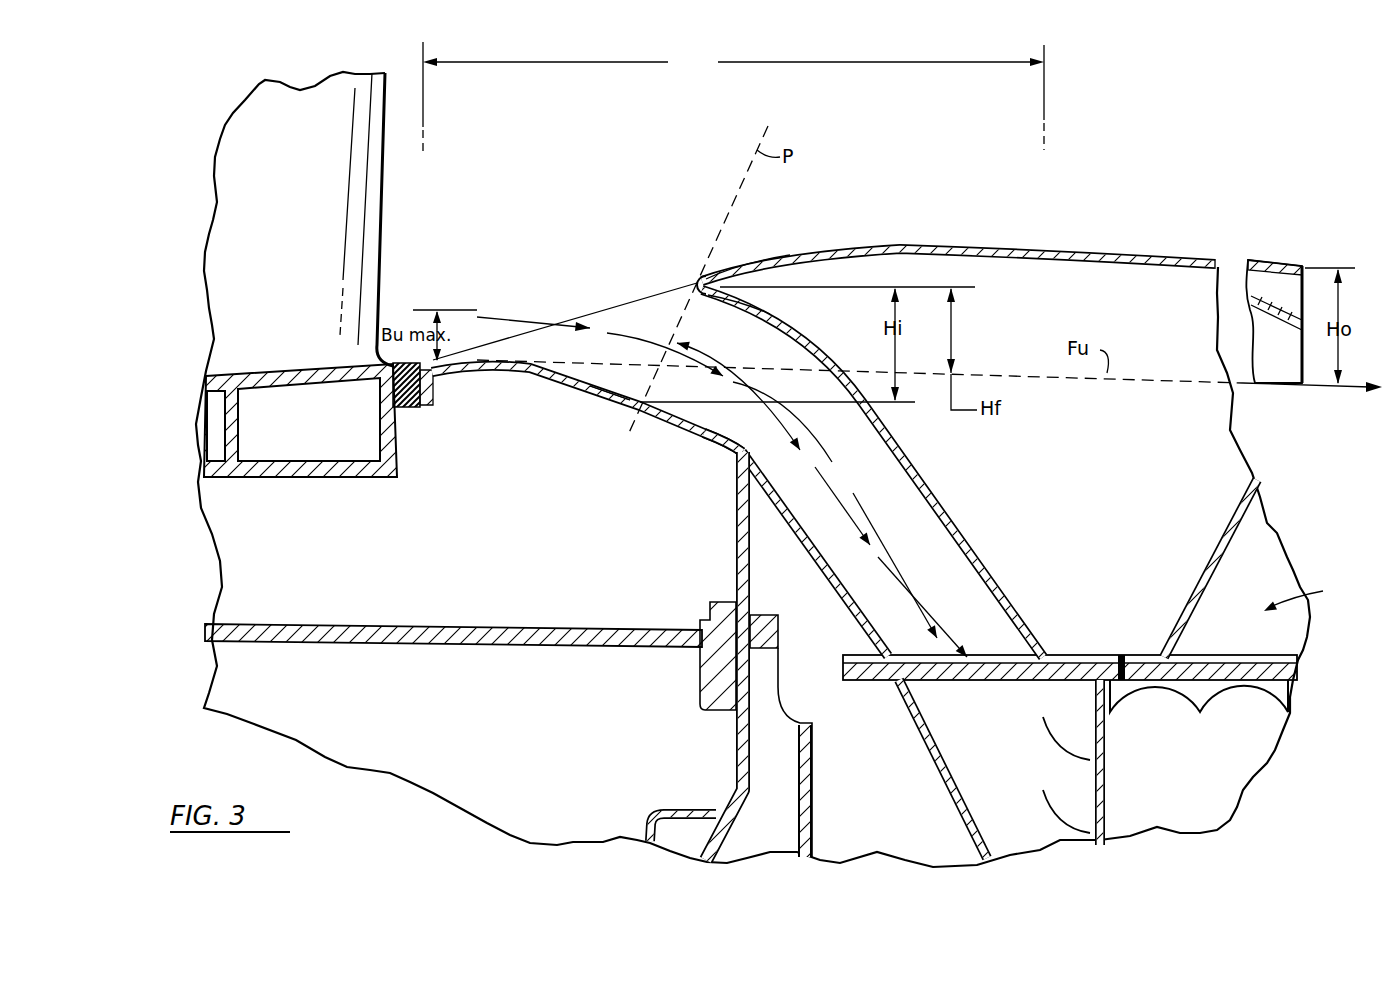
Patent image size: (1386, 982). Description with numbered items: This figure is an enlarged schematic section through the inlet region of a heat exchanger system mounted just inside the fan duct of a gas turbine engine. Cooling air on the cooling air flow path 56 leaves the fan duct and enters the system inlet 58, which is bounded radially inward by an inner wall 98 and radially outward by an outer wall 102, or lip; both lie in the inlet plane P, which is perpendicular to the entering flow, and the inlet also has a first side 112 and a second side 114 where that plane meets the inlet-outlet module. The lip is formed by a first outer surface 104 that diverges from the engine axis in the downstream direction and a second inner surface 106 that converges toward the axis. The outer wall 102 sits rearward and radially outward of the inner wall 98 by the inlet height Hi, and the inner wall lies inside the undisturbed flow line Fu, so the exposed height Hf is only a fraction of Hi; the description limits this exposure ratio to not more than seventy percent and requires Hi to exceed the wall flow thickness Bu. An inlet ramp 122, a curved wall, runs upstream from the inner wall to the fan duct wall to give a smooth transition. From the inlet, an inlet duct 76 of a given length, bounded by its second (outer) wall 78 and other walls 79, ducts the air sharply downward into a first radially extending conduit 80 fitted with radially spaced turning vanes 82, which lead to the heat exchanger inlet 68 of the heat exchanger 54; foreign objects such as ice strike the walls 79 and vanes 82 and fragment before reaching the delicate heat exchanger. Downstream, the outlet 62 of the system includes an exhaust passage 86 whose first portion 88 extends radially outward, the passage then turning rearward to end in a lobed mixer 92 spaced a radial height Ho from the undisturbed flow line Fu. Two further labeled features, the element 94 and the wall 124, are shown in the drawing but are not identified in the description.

The heat exchanger 54 is at (1198, 754).
The cooling air flow path 56 is at (490, 317).
The system inlet 58 is at (733, 98).
The outlet 62 is at (1275, 230).
The heat exchanger inlet 68 is at (1105, 805).
The inlet duct 76 is at (943, 571).
The second (outer) wall 78 is at (845, 607).
The walls 79 is at (943, 507).
The first radially extending conduit 80 is at (987, 719).
The turning vanes 82 is at (1047, 803).
The exhaust passage 86 is at (1307, 596).
The first portion 88 is at (1252, 563).
The lobed mixer 92 is at (1265, 350).
The case flange 94 is at (1285, 270).
The inner wall 98 is at (656, 413).
The outer wall 102 is at (697, 282).
The first outer surface 104 is at (730, 262).
The second inner surface 106 is at (700, 297).
The first side 112 is at (612, 405).
The second side 114 is at (612, 405).
The inlet ramp 122 is at (567, 386).
The outer wall 124 is at (1087, 250).